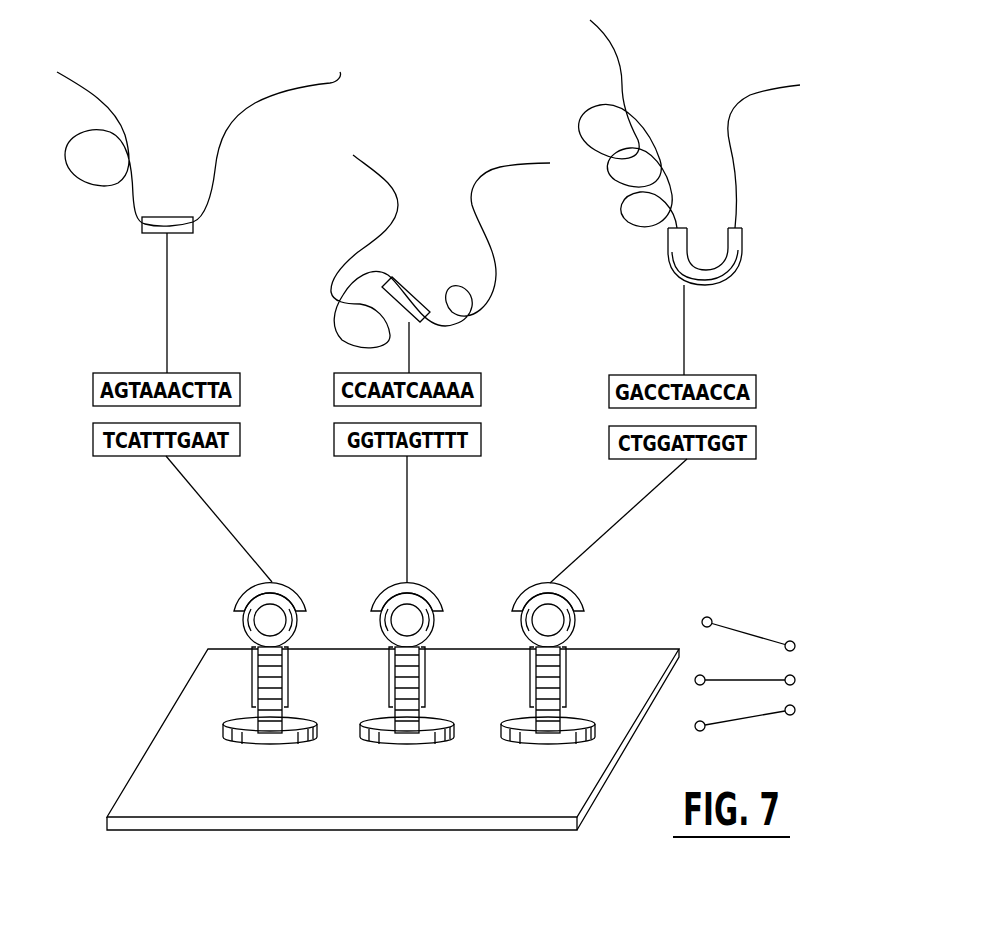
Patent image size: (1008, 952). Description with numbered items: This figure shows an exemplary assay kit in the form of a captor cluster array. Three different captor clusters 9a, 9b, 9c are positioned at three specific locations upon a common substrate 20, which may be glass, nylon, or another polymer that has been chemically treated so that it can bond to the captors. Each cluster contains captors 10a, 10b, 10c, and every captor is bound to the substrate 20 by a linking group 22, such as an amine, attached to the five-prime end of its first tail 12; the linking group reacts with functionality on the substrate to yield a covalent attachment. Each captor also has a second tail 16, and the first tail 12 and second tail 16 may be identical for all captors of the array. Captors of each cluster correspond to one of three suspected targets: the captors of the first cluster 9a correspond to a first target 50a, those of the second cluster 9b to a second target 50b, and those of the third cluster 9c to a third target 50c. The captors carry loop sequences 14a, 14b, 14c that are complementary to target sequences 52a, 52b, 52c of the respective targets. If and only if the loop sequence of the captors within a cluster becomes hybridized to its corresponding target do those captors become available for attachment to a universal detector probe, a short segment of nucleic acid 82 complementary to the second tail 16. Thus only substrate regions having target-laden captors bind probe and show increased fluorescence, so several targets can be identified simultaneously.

The first target 50a is at (199, 146).
The second target 50b is at (440, 244).
The third target 50c is at (689, 124).
The target sequence 52a is at (164, 198).
The target sequence 52b is at (406, 284).
The target sequence 52c is at (669, 268).
The loop sequence 14a is at (285, 580).
The loop sequence 14b is at (422, 580).
The loop sequence 14c is at (571, 584).
The captor 10a is at (228, 629).
The captor 10b is at (365, 629).
The captor 10c is at (508, 629).
The first tail 12 is at (385, 690).
The second tail 16 is at (433, 677).
The linking group 22 is at (397, 712).
The first captor cluster 9a is at (278, 760).
The second captor cluster 9b is at (415, 760).
The third captor cluster 9c is at (566, 773).
The substrate 20 is at (393, 754).
The nucleic acid 82 is at (776, 674).